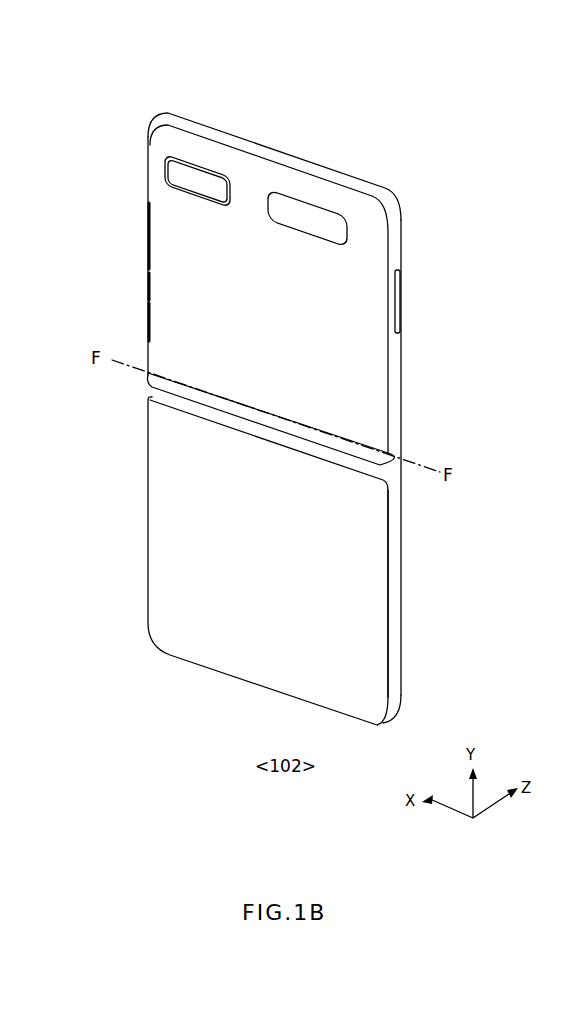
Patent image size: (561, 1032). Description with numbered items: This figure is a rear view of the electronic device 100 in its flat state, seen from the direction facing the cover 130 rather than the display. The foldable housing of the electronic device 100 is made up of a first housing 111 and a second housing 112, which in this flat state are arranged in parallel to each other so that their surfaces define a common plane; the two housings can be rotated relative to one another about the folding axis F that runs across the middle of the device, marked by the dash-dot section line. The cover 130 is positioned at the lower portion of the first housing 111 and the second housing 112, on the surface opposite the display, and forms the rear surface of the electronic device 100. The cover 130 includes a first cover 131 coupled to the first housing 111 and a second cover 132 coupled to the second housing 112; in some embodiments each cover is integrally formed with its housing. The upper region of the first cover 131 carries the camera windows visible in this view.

The electronic device 100 is at (174, 86).
The first housing 111 is at (410, 362).
The second housing 112 is at (410, 587).
The cover 130 is at (93, 683).
The first cover 131 is at (253, 192).
The second cover 132 is at (243, 637).